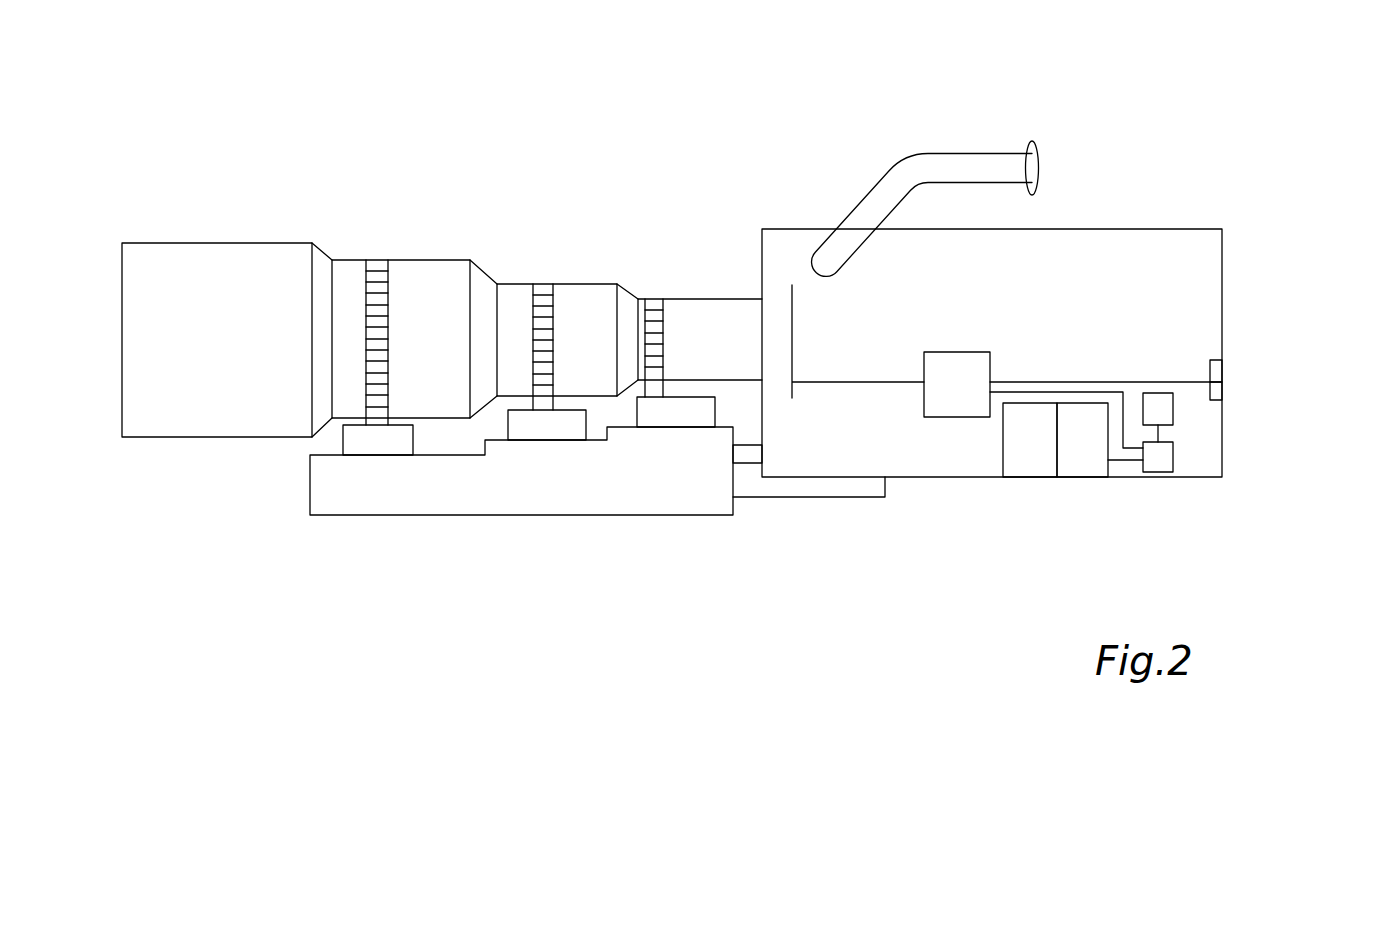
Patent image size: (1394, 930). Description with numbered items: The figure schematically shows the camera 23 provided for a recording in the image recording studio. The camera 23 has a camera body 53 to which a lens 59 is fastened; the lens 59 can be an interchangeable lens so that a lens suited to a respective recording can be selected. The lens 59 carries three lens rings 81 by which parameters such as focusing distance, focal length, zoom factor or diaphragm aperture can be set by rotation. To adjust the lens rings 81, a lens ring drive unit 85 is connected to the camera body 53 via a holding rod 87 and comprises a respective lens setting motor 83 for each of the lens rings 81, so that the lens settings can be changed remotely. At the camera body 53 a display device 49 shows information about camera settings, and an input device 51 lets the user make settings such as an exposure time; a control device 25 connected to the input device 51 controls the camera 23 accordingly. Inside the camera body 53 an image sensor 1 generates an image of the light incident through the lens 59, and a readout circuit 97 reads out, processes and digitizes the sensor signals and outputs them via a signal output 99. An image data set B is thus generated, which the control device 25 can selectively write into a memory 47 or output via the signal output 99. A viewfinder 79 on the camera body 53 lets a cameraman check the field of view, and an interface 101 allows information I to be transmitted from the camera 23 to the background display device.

The image sensor 1 is at (792, 350).
The camera 23 is at (977, 274).
The control device 25 is at (1165, 458).
The memory 47 is at (1165, 413).
The display device 49 is at (1030, 460).
The input device 51 is at (1090, 460).
The camera body 53 is at (1133, 252).
The lens 59 is at (540, 217).
The viewfinder 79 is at (965, 158).
The lens rings 81 is at (381, 258).
The lens setting motors 83 is at (378, 441).
The lens ring drive unit 85 is at (459, 485).
The holding rod 87 is at (748, 467).
The readout circuit 97 is at (1067, 400).
The signal output 99 is at (1222, 388).
The interface 101 is at (1222, 370).
The image data set B is at (1235, 398).
The information I is at (1287, 343).